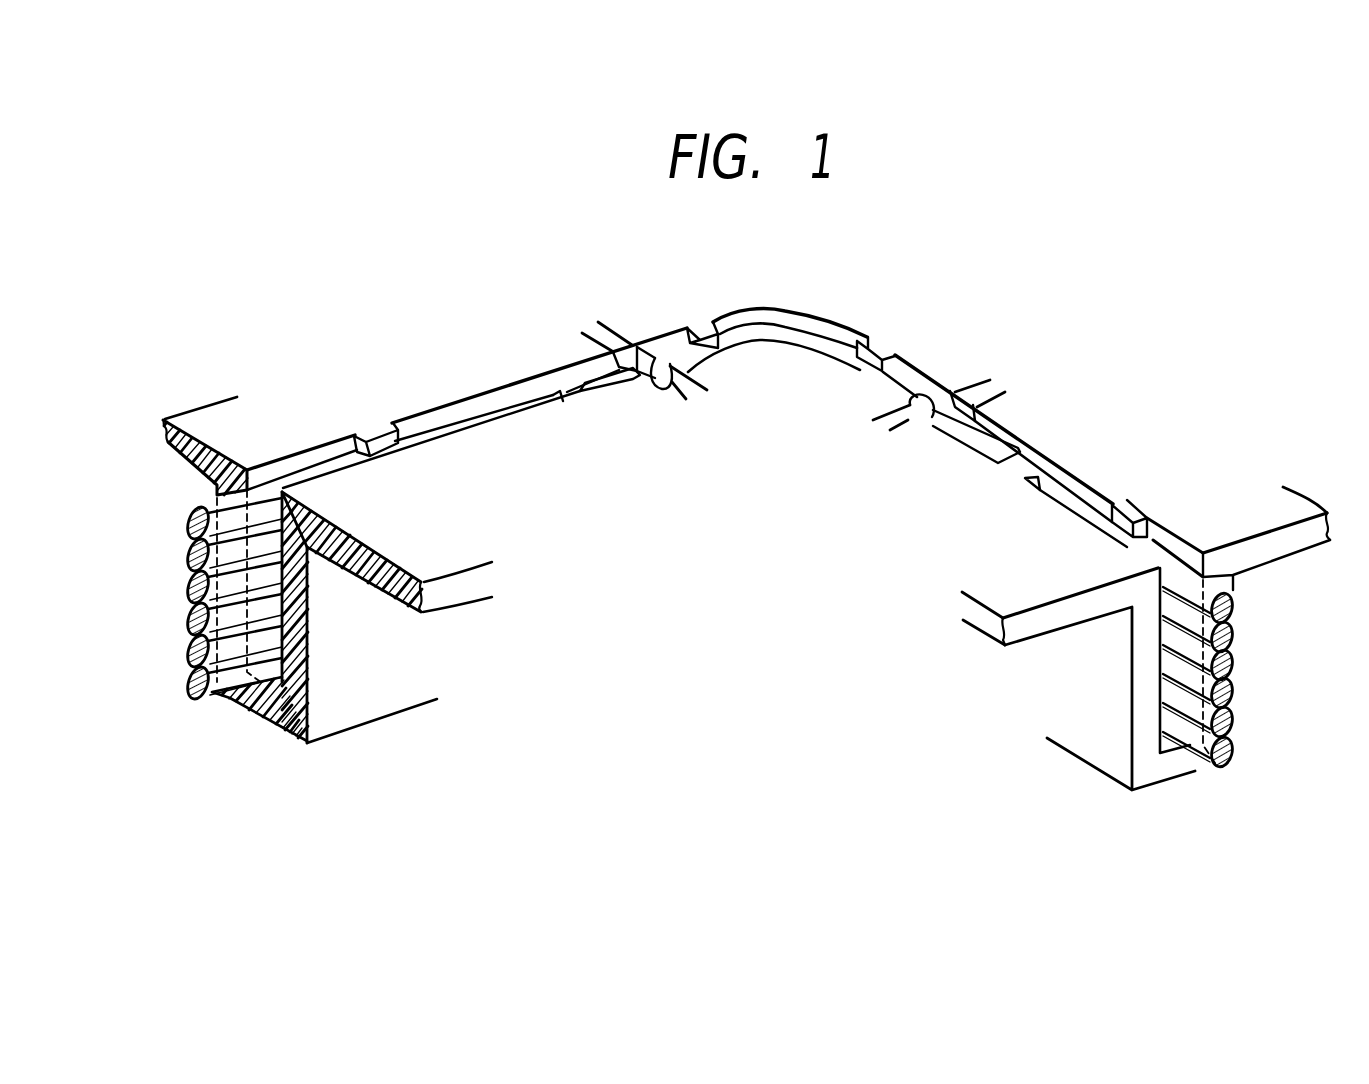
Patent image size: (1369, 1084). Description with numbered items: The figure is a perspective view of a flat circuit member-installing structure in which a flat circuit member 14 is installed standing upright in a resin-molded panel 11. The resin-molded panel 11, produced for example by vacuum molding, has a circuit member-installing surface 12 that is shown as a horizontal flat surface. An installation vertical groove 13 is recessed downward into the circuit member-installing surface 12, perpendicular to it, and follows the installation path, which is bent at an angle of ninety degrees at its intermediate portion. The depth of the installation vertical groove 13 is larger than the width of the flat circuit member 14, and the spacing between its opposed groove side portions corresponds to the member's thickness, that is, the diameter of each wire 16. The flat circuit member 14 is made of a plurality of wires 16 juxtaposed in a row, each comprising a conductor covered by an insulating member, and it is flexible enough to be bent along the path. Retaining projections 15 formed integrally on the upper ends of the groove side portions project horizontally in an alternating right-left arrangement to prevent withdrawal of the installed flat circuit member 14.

The resin-molded panel 11 is at (242, 438).
The circuit member-installing surface 12 is at (462, 516).
The installation vertical groove 13 is at (503, 397).
The flat circuit member 14 is at (185, 600).
The retaining projections 15 is at (373, 430).
The wires 16 is at (189, 695).